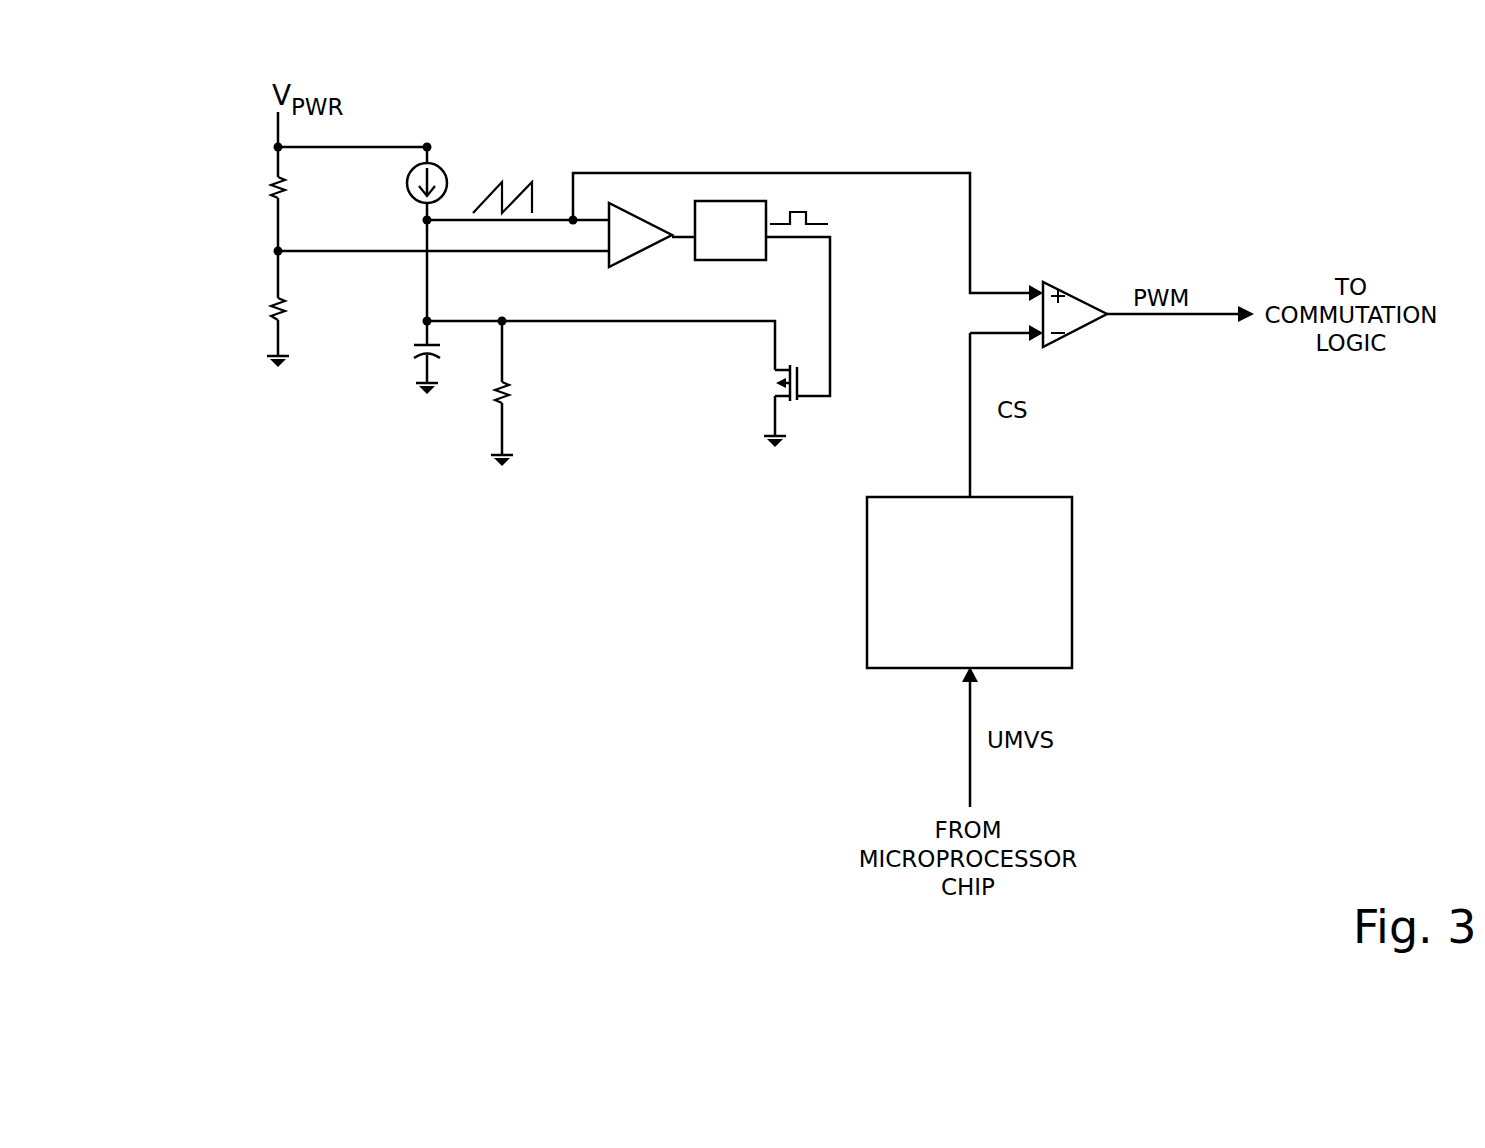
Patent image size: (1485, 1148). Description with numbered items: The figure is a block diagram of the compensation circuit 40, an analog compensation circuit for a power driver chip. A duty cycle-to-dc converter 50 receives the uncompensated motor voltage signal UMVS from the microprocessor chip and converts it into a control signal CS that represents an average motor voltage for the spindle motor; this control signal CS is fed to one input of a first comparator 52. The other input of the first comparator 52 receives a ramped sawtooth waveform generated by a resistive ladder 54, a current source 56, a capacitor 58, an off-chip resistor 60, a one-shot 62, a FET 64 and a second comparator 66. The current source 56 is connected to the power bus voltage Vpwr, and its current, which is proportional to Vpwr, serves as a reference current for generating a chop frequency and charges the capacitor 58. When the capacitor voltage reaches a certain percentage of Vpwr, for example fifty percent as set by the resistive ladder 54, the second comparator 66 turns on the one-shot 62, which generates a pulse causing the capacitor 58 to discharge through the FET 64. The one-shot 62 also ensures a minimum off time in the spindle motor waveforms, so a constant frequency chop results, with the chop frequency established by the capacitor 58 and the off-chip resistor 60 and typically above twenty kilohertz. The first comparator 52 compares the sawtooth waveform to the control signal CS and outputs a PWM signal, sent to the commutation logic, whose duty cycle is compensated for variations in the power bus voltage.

The compensation circuit 40 is at (552, 636).
The duty cycle-to-dc converter 50 is at (1072, 592).
The first comparator 52 is at (1060, 287).
The resistive ladder 54 is at (265, 190).
The current source 56 is at (408, 190).
The capacitor 58 is at (427, 359).
The off-chip resistor 60 is at (512, 383).
The one-shot 62 is at (762, 255).
The FET 64 is at (806, 412).
The second comparator 66 is at (641, 218).